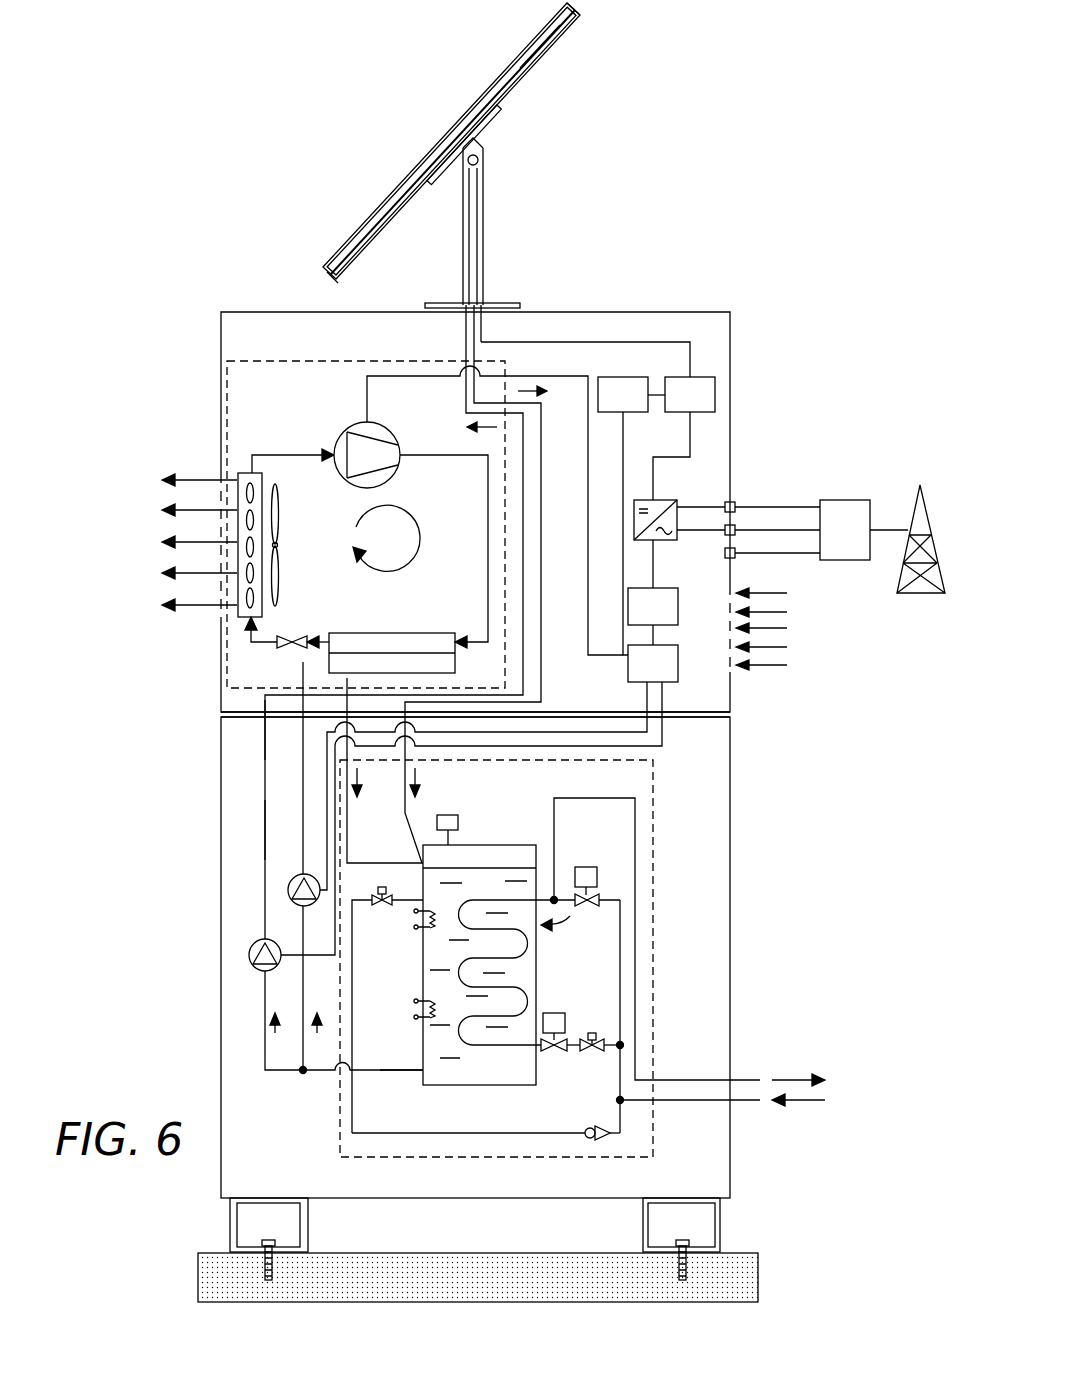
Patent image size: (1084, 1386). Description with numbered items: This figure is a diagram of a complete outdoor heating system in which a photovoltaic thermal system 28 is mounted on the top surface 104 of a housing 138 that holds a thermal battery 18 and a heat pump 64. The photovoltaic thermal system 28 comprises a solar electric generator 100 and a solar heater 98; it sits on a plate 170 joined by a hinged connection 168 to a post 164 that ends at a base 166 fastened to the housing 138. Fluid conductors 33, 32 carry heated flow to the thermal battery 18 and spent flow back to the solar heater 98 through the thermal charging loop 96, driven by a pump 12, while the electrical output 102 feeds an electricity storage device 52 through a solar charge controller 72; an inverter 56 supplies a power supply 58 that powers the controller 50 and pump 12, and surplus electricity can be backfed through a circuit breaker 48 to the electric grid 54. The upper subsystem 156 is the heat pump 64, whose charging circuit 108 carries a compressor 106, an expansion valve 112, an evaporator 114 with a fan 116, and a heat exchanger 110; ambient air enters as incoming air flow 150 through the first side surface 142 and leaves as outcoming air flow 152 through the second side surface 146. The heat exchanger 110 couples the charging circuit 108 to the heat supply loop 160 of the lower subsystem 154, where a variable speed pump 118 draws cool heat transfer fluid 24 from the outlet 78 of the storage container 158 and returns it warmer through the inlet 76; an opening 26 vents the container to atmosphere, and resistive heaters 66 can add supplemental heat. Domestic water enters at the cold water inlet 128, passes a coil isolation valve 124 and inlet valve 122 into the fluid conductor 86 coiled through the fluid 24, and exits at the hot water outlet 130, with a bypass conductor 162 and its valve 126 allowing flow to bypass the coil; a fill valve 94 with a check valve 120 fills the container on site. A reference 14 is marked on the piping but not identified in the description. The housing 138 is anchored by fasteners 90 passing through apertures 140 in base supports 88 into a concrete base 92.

The photovoltaic thermal system 28 is at (497, 78).
The plate 170 is at (582, 24).
The solar electric generator 100 is at (555, 40).
The solar heater 98 is at (368, 238).
The hinged connection 168 is at (485, 158).
The post 164 is at (485, 186).
The fluid conductor 32 is at (463, 212).
The fluid conductor 33 is at (466, 250).
The output 102 is at (482, 226).
The base 166 is at (513, 304).
The top surface 104 is at (603, 312).
The subsystem 156 is at (225, 625).
The second side surface 146 is at (222, 648).
The first side surface 142 is at (735, 675).
The incoming air flow 150 is at (780, 645).
The outcoming air flow 152 is at (200, 478).
The evaporator 114 is at (247, 472).
The fan 116 is at (280, 495).
The heat pump 64 is at (303, 418).
The compressor 106 is at (378, 432).
The charging circuit 108 is at (487, 510).
The heat exchanger 110 is at (373, 633).
The expansion valve 112 is at (285, 645).
The electricity storage device 52 is at (631, 516).
The solar charge controller 72 is at (598, 421).
The inverter 56 is at (672, 500).
The power supply 58 is at (653, 616).
The controller 50 is at (479, 800).
The circuit breaker 48 is at (864, 530).
The electric grid 54 is at (920, 595).
The housing 138 is at (732, 898).
The thermal charging loop 96 is at (263, 737).
The heat supply loop 160 is at (303, 793).
The energy system 14 is at (263, 833).
The pump 118 is at (287, 883).
The pump 12 is at (258, 970).
The inlet 76 is at (420, 862).
The storage container 158 is at (495, 845).
The opening 26 is at (446, 815).
The heat transfer fluid 24 is at (482, 1087).
The fluid conductor 86 is at (520, 958).
The subsystem 154 is at (340, 1113).
The fill valve 94 is at (382, 904).
The resistive heater 66 is at (415, 928).
The outlet 78 is at (418, 1074).
The thermal battery 18 is at (571, 920).
The valve 126 is at (588, 867).
The bypass conductor 162 is at (620, 957).
The hot water outlet 130 is at (745, 1080).
The cold water inlet 128 is at (745, 1100).
The inlet valve 122 is at (550, 1012).
The coil isolation valve 124 is at (592, 1034).
The check valve 120 is at (596, 1128).
The base supports 88 is at (230, 1230).
The fasteners 90 is at (275, 1240).
The apertures 140 is at (235, 1250).
The base 92 is at (760, 1270).